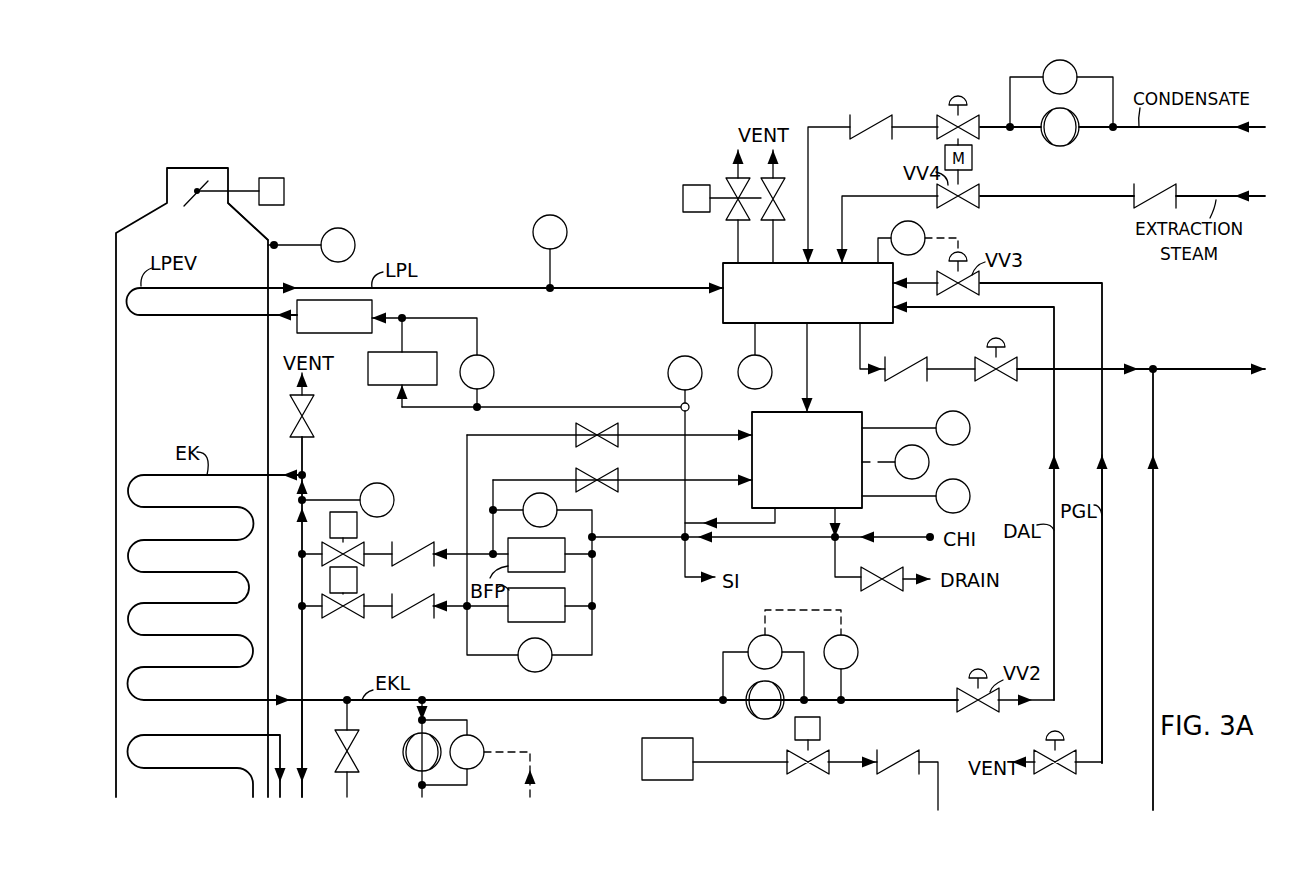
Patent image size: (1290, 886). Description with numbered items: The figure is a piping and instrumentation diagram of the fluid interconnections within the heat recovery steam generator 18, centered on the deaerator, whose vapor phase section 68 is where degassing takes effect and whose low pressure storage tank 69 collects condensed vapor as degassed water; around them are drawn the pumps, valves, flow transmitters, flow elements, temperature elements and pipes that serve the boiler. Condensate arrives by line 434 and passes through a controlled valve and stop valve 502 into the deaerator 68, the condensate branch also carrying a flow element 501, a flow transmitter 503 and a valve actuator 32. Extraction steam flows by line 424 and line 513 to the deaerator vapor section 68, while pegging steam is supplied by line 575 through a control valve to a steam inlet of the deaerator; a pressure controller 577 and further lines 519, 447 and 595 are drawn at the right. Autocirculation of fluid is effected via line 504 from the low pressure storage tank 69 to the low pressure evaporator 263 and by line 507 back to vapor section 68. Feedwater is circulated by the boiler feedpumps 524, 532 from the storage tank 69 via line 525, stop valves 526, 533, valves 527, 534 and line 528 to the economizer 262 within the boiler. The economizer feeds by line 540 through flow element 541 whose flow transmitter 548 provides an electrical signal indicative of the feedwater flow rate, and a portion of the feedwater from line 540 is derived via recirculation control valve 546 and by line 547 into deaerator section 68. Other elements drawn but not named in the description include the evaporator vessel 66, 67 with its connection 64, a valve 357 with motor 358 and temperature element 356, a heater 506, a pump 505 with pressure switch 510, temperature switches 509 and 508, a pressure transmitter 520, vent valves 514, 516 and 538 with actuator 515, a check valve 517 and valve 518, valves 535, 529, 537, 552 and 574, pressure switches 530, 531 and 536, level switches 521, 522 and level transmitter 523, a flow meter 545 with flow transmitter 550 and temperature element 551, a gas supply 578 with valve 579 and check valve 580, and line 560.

The heat recovery steam generator 18 is at (552, 166).
The low pressure evaporator tank 66 is at (190, 472).
The low pressure evaporator tank 67 is at (167, 185).
The valve 357 is at (186, 208).
The motor 358 is at (263, 178).
The tank wall 64 is at (252, 222).
The temperature element 356 is at (350, 233).
The low pressure evaporator 263 is at (207, 316).
The economizer 262 is at (197, 700).
The vent valve 538 is at (313, 422).
The line 528 is at (302, 517).
The pressure switch 531 is at (385, 467).
The valve 527 is at (356, 542).
The stop valve 526 is at (420, 565).
The valve 534 is at (343, 618).
The stop valve 533 is at (408, 615).
The boiler feedpump 524 is at (565, 548).
The pump 532 is at (565, 596).
The pressure switch 536 is at (520, 665).
The pressure switch 530 is at (533, 493).
The valve 535 is at (604, 424).
The valve 529 is at (604, 468).
The heater 506 is at (356, 300).
The pump 505 is at (396, 385).
The pressure switch 510 is at (493, 365).
The temperature switch 509 is at (535, 228).
The line 507 is at (620, 288).
The temperature switch 508 is at (676, 358).
The pressure transmitter 520 is at (739, 356).
The deaerator vapor phase section 68 is at (723, 270).
The vent valve 514 is at (728, 186).
The vent valve 516 is at (783, 213).
The actuator 515 is at (683, 193).
The stop valve 502 is at (862, 116).
The line 513 is at (862, 196).
The pressure controller 577 is at (896, 226).
The line 519 is at (1075, 355).
The line 575 is at (1100, 630).
The line 547 is at (1052, 620).
The check valve 517 is at (908, 360).
The valve 518 is at (1008, 357).
The line 447 is at (1200, 369).
The line 595 is at (1172, 589).
The valve VV1 32 is at (966, 96).
The condensate line 434 is at (1186, 128).
The flow meter 501 is at (1045, 140).
The flow transmitter 503 is at (1075, 68).
The line 424 is at (1228, 196).
The low pressure storage tank 69 is at (832, 412).
The level switch 521 is at (968, 418).
The level switch 522 is at (930, 462).
The level transmitter 523 is at (968, 488).
The line 504 is at (738, 520).
The line 525 is at (762, 540).
The drain valve 537 is at (885, 591).
The flow meter 545 is at (748, 708).
The flow transmitter 550 is at (752, 640).
The temperature element 551 is at (858, 645).
The recirculation control valve 546 is at (968, 678).
The nitrogen gas supply 578 is at (642, 750).
The valve 579 is at (790, 757).
The check valve 580 is at (898, 755).
The vent valve 574 is at (1046, 748).
The flow element 541 is at (405, 745).
The flow transmitter 548 is at (470, 738).
The valve 552 is at (357, 740).
The line 540 is at (340, 700).
The line 560 is at (303, 745).